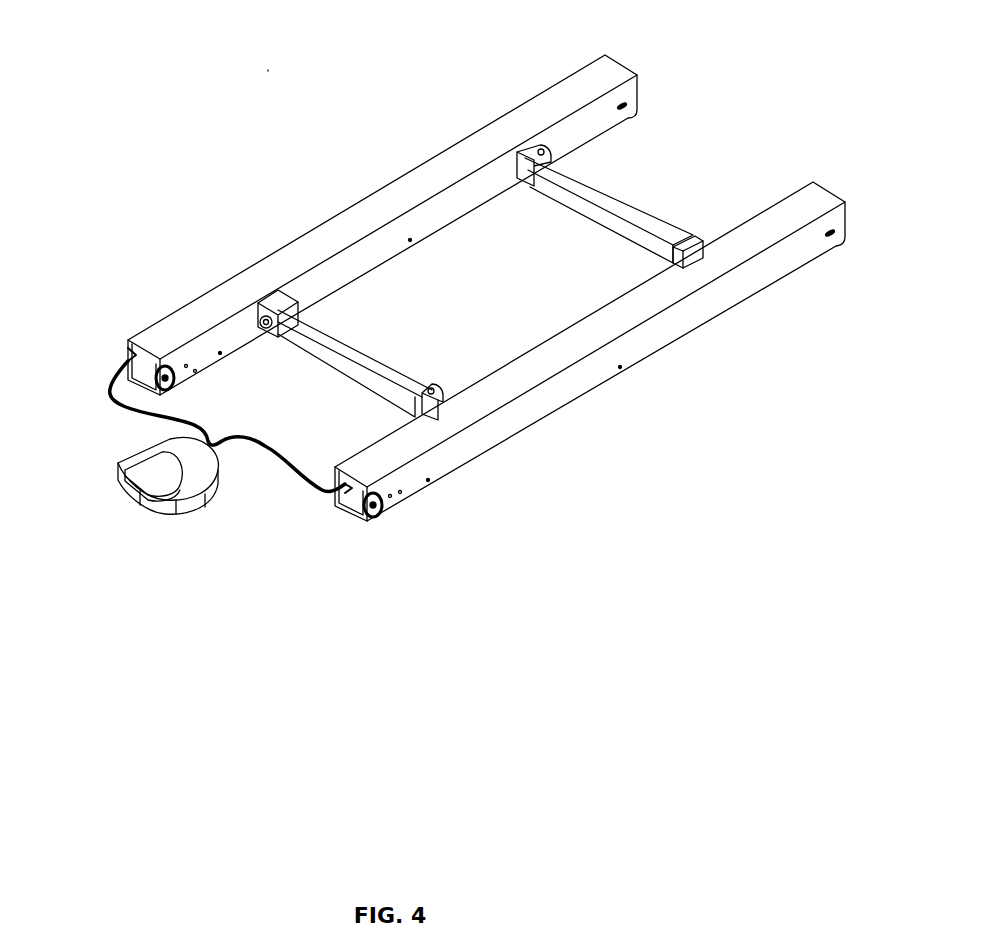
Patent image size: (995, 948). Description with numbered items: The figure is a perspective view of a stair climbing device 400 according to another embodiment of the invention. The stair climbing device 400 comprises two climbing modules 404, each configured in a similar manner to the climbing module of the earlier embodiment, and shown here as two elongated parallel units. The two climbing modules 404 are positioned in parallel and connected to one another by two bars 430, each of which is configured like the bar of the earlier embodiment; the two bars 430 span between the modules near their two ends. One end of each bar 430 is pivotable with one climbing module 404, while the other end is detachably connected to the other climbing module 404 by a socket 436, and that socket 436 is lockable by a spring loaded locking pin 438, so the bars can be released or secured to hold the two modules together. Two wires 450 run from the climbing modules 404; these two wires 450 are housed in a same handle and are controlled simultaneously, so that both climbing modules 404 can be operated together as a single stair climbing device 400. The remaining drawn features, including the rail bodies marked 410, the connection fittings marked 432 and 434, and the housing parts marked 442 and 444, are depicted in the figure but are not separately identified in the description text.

The stair climbing device 400 is at (268, 70).
The climbing module 404 is at (127, 370).
The side rail 410 is at (163, 342).
The bar 430 is at (612, 197).
The bracket 432 is at (532, 150).
The fastener 434 is at (543, 150).
The socket 436 is at (705, 242).
The spring loaded locking pin 438 is at (258, 316).
The foot pedal housing 442 is at (192, 500).
The pedal surface 444 is at (132, 487).
The wire 450 is at (111, 400).